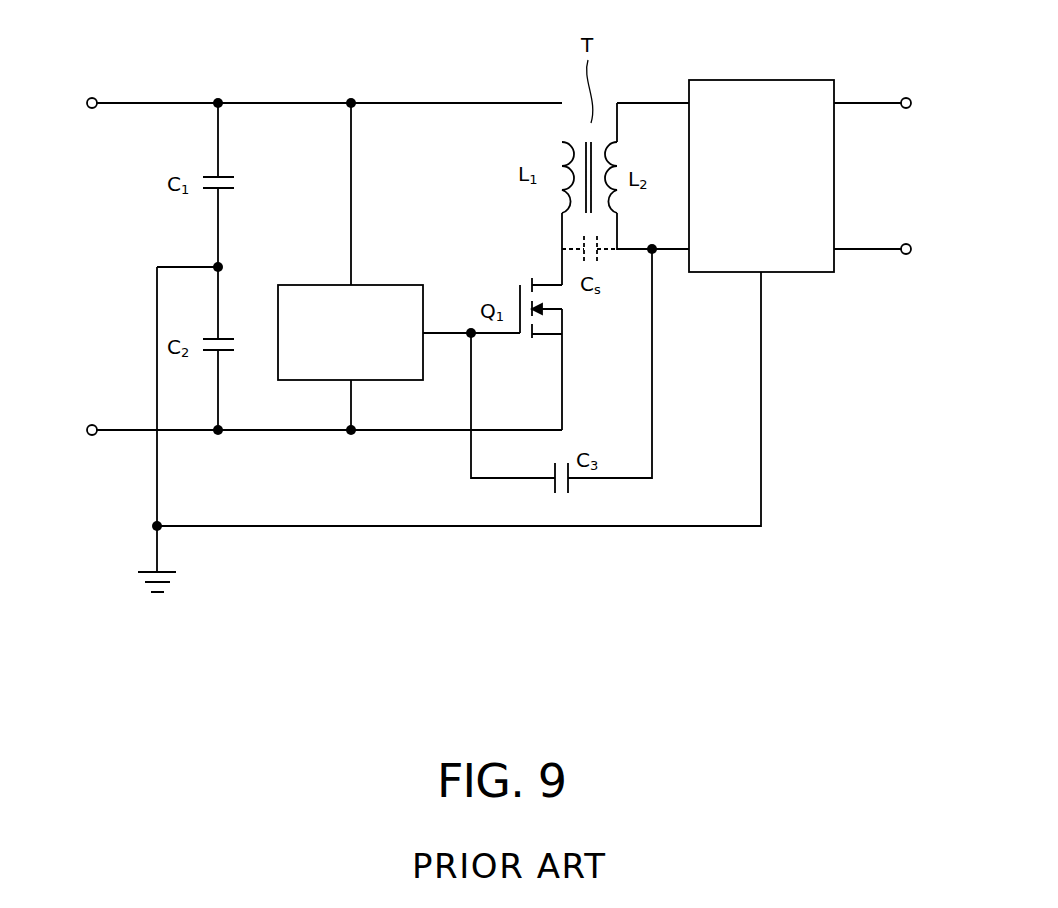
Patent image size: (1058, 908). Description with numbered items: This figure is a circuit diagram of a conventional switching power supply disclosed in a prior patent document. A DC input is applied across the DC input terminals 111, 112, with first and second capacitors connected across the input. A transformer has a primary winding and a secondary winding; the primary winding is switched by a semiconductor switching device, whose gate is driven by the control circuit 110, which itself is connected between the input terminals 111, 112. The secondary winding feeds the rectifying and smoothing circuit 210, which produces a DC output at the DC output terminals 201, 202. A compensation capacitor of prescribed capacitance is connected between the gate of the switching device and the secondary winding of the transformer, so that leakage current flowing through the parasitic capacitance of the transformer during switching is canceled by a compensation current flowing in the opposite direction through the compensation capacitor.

The DC input terminal 111 is at (69, 103).
The DC input terminal 112 is at (69, 430).
The control circuit 110 is at (320, 291).
The DC output terminal 201 is at (896, 103).
The DC output terminal 202 is at (896, 249).
The rectifying and smoothing circuit 210 is at (766, 92).